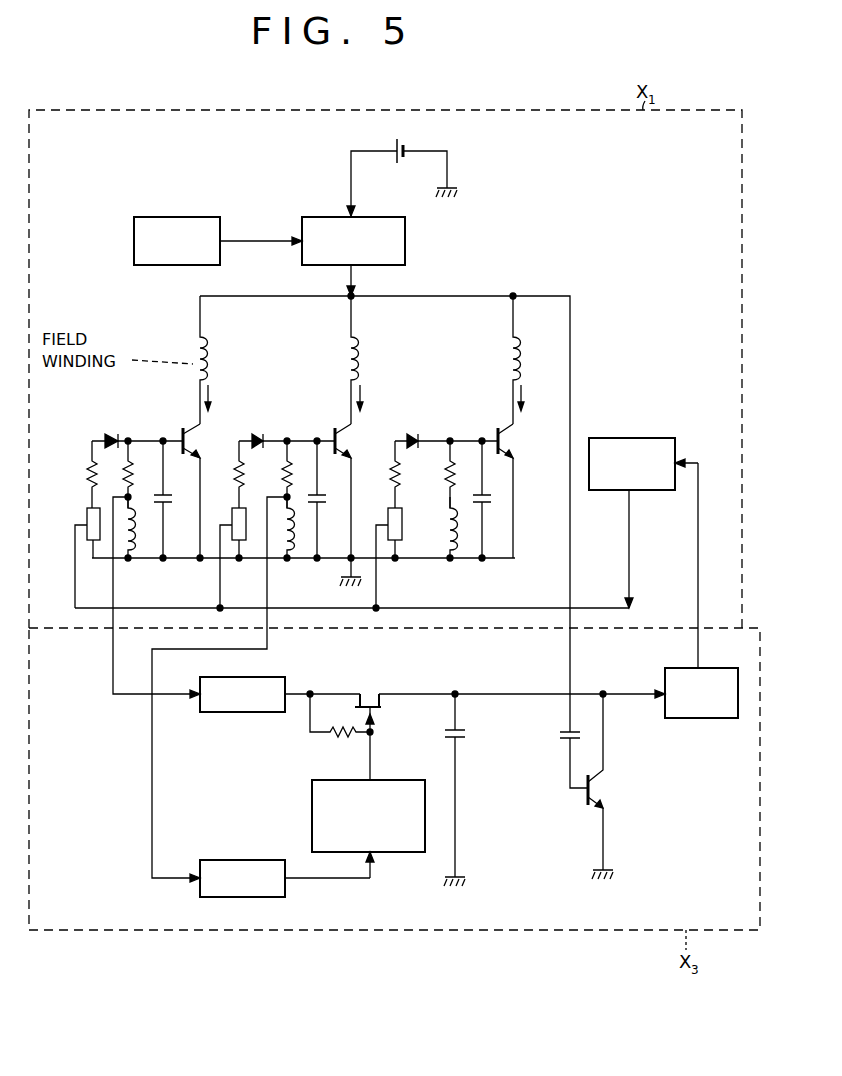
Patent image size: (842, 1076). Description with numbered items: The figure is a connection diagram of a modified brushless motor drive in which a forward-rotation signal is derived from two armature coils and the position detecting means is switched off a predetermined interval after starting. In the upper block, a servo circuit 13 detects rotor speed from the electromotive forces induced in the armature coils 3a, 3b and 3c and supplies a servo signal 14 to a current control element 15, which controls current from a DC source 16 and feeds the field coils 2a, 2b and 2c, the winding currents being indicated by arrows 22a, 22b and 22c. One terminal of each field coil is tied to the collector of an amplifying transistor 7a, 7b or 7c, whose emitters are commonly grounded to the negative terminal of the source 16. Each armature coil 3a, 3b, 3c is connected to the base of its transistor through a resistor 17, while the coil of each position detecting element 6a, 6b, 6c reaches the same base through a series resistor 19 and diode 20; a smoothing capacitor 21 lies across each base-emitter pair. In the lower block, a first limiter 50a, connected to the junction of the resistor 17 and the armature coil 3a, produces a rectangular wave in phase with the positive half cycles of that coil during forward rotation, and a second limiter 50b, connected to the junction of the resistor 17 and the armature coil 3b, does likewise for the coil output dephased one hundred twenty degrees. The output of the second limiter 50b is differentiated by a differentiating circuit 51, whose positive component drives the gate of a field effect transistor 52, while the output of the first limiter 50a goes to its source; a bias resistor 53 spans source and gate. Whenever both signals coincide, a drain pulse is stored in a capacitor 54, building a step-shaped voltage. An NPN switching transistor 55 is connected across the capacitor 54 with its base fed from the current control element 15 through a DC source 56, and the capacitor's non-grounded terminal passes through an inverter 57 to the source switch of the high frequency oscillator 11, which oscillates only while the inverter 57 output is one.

The high frequency oscillator 11 is at (628, 438).
The servo circuit 13 is at (176, 217).
The servo signal 14 is at (259, 240).
The current control element 15 is at (381, 217).
The DC source 16 is at (400, 141).
The field coil 2a is at (221, 360).
The field coil 2b is at (373, 360).
The field coil 2c is at (534, 360).
The winding current (phase a) 22a is at (226, 398).
The winding current (phase b) 22b is at (378, 398).
The winding current (phase c) 22c is at (539, 398).
The amplifying transistor 7a is at (210, 491).
The amplifying transistor 7b is at (363, 505).
The amplifying transistor 7c is at (525, 491).
The diode 20 is at (118, 435).
The resistor 19 is at (84, 486).
The resistor 17 is at (136, 485).
The smoothing capacitor 21 is at (173, 500).
The position detecting element 6a is at (86, 513).
The position detecting element 6b is at (233, 511).
The position detecting element 6c is at (389, 511).
The armature coil 3a is at (135, 556).
The armature coil 3b is at (293, 555).
The armature coil 3c is at (448, 545).
The first limiter 50a is at (238, 712).
The second limiter 50b is at (240, 897).
The differentiating circuit 51 is at (312, 822).
The field effect transistor 52 is at (380, 711).
The bias resistor 53 is at (340, 730).
The capacitor 54 is at (470, 734).
The NPN switching transistor 55 is at (626, 786).
The DC source 56 is at (565, 738).
The inverter 57 is at (698, 718).